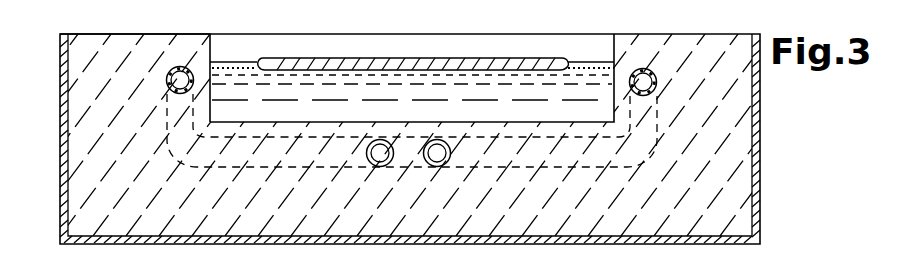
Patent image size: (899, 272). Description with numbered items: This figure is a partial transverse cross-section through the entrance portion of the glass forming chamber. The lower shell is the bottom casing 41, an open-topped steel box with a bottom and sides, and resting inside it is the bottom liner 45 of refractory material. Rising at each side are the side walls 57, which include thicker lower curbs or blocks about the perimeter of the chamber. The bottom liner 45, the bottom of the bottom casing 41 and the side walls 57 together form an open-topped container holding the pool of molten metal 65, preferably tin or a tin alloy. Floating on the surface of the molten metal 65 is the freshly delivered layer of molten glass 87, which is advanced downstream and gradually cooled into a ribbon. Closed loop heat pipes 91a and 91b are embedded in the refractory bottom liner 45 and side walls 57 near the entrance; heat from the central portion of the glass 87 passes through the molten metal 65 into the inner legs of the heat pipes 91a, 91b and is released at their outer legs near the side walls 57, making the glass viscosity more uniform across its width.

The bottom casing 41 is at (754, 222).
The bottom liner 45 is at (517, 228).
The side walls 57 is at (153, 34).
The pool of molten metal 65 is at (237, 62).
The layer of molten glass 87 is at (412, 58).
The closed loop heat pipe 91a is at (167, 113).
The closed loop heat pipe 91b is at (652, 68).